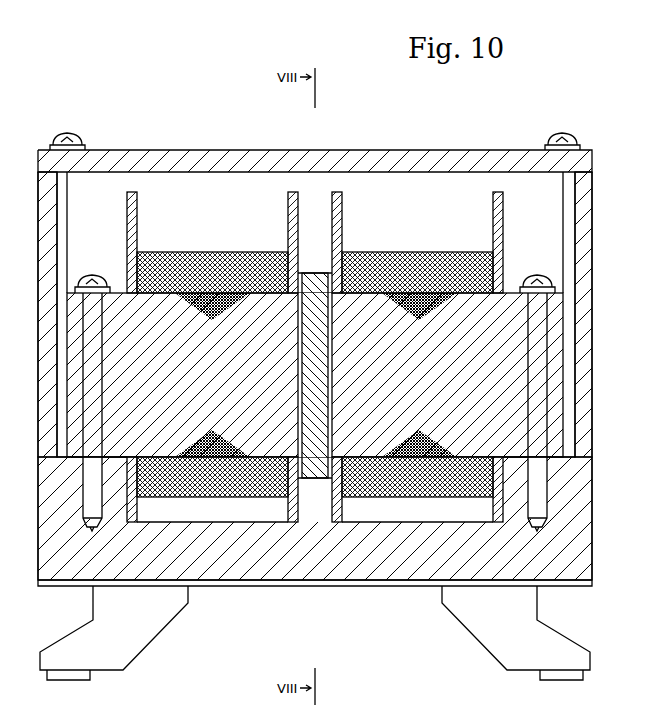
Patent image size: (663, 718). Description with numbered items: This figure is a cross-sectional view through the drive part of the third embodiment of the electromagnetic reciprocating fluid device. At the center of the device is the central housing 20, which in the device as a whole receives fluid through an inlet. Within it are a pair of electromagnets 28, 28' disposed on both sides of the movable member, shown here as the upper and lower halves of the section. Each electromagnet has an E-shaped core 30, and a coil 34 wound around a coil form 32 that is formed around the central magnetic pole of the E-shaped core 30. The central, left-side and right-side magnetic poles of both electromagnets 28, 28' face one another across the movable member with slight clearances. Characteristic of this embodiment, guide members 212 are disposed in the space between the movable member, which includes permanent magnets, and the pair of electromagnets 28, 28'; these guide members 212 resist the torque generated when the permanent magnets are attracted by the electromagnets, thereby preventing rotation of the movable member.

The central housing 20 is at (575, 560).
The electromagnet 28 is at (176, 145).
The electromagnet 28' is at (453, 145).
The E-shaped core 30 is at (121, 300).
The coil form 32 is at (140, 199).
The coil 34 is at (418, 253).
The guide member 212 is at (298, 523).